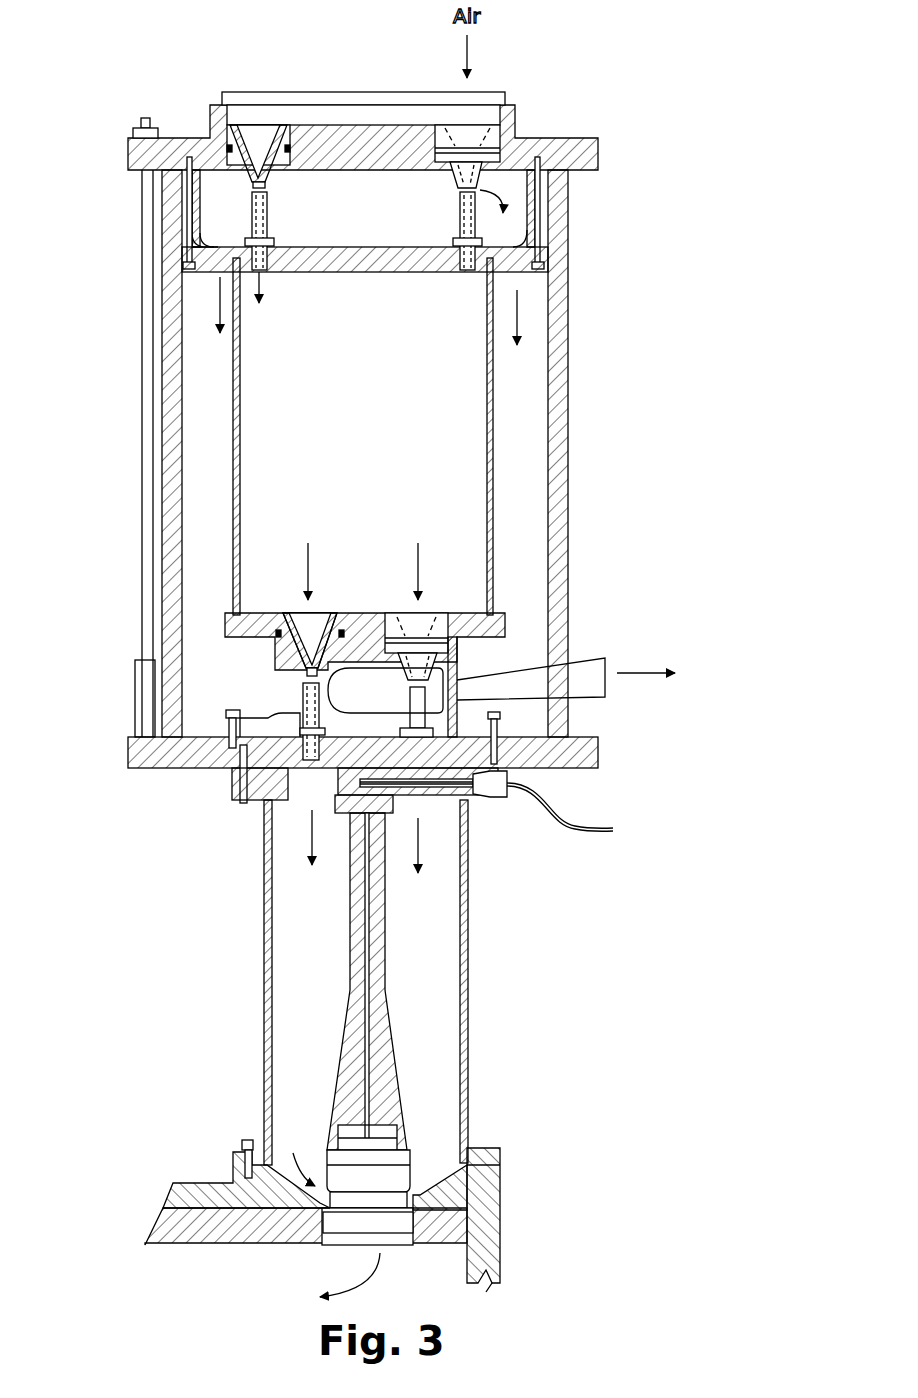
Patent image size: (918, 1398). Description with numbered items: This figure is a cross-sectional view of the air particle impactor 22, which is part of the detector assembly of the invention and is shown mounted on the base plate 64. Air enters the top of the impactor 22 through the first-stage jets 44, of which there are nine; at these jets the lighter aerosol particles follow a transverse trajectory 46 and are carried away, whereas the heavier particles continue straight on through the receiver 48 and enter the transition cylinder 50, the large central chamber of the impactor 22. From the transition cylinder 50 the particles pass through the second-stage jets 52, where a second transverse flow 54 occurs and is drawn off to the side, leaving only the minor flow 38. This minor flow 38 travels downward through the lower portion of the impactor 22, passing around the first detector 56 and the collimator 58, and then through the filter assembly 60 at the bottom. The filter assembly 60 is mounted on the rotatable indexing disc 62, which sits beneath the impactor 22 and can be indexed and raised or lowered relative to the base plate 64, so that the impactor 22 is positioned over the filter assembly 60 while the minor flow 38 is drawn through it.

The impactor 22 is at (678, 453).
The minor flow 38 is at (310, 828).
The first-stage jets 44 is at (263, 130).
The transverse trajectory 46 is at (505, 202).
The receiver 48 is at (248, 215).
The transition cylinder 50 is at (494, 397).
The second-stage jets 52 is at (455, 610).
The second transverse flow 54 is at (552, 666).
The first detector 56 is at (407, 1148).
The collimator 58 is at (405, 1167).
The filter assembly 60 is at (350, 1225).
The rotatable indexing disc 62 is at (178, 1230).
The base plate 64 is at (180, 1180).